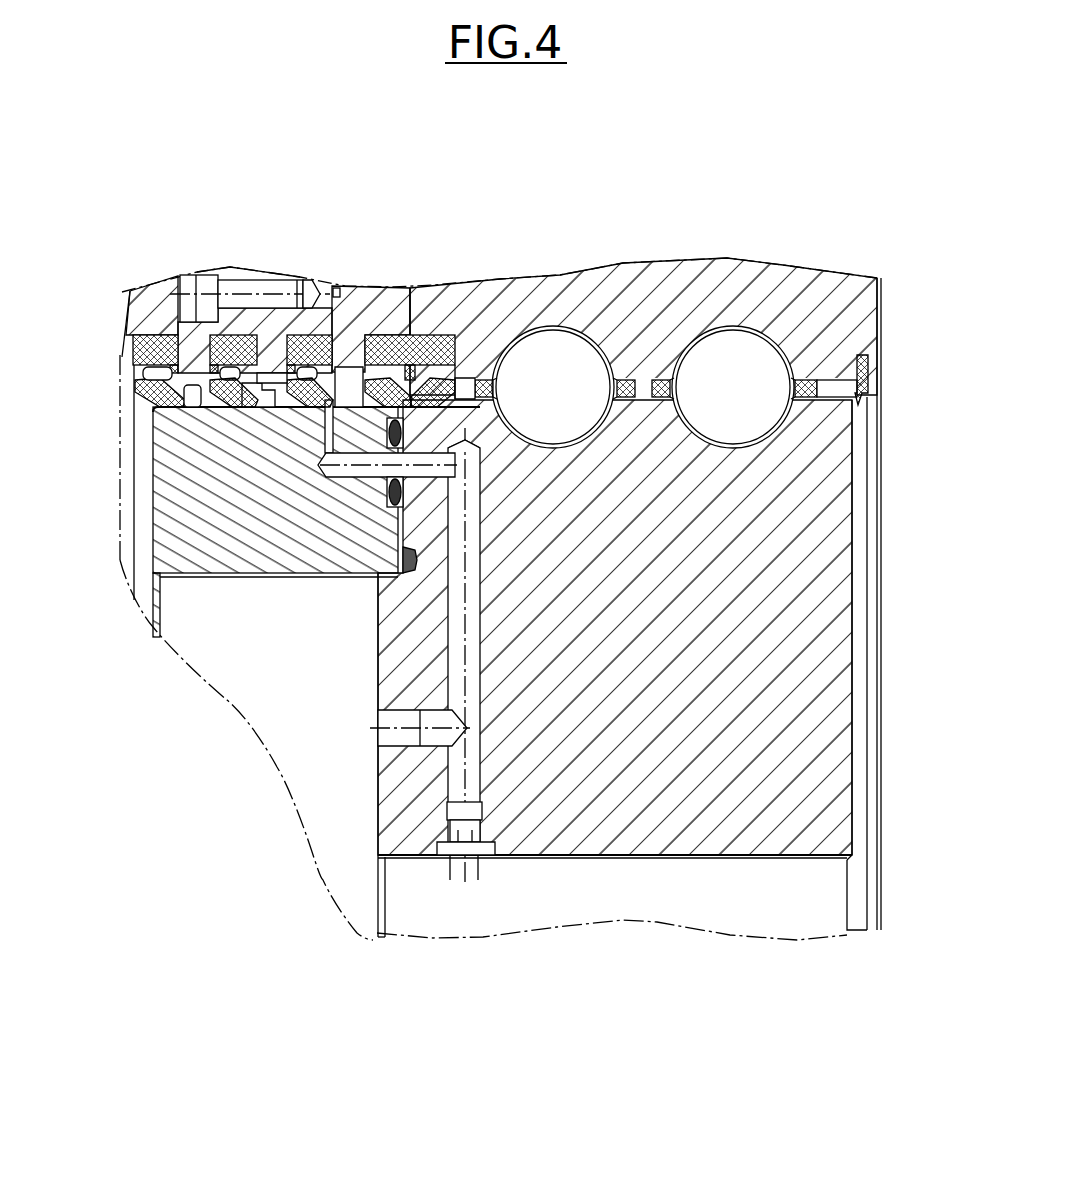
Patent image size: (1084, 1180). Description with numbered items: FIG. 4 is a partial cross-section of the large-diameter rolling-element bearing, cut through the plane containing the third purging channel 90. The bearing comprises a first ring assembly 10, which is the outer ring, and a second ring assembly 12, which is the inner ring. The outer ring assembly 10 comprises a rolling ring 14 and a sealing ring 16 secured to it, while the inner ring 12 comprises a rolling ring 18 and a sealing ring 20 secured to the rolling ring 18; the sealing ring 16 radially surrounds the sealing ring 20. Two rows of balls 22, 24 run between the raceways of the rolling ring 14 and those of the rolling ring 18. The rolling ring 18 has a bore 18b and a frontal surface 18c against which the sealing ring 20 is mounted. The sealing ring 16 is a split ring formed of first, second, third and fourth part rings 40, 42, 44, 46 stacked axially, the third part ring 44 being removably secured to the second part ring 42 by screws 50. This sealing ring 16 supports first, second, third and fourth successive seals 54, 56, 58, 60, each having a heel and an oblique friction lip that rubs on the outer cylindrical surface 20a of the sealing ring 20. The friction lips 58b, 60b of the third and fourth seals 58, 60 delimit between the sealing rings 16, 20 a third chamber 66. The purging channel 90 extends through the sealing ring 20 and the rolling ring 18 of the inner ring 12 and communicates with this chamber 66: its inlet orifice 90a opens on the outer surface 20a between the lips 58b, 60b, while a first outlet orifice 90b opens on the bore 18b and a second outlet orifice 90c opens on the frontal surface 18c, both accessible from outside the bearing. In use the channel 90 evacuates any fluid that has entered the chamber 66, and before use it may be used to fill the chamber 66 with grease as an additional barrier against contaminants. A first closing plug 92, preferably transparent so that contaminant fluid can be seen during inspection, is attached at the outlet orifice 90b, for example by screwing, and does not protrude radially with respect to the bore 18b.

The first ring assembly 10 is at (622, 208).
The second ring assembly 12 is at (607, 905).
The rolling ring 14 is at (659, 293).
The sealing ring 16 is at (235, 252).
The rolling ring 18 is at (688, 840).
The inner cylindrical surface or bore 18b is at (800, 860).
The first frontal surface 18c is at (377, 818).
The sealing ring 20 is at (180, 512).
The outer cylindrical surface 20a is at (152, 408).
The balls 22 is at (537, 401).
The balls 24 is at (717, 401).
The first part ring 40 is at (396, 298).
The second part ring 42 is at (313, 312).
The third part ring 44 is at (190, 322).
The fourth part ring 46 is at (143, 312).
The screws 50 is at (270, 298).
The first seal 54 is at (140, 355).
The second seal 56 is at (136, 374).
The third seal 58 is at (288, 403).
The friction lip 58b is at (300, 370).
The fourth seal 60 is at (396, 342).
The friction lip 60b is at (414, 372).
The third chamber 66 is at (330, 406).
The third purging channel 90 is at (447, 667).
The inlet orifice 90a is at (322, 460).
The first outlet orifice 90b is at (453, 857).
The second outlet orifice 90c is at (377, 740).
The first closing plug 92 is at (493, 845).